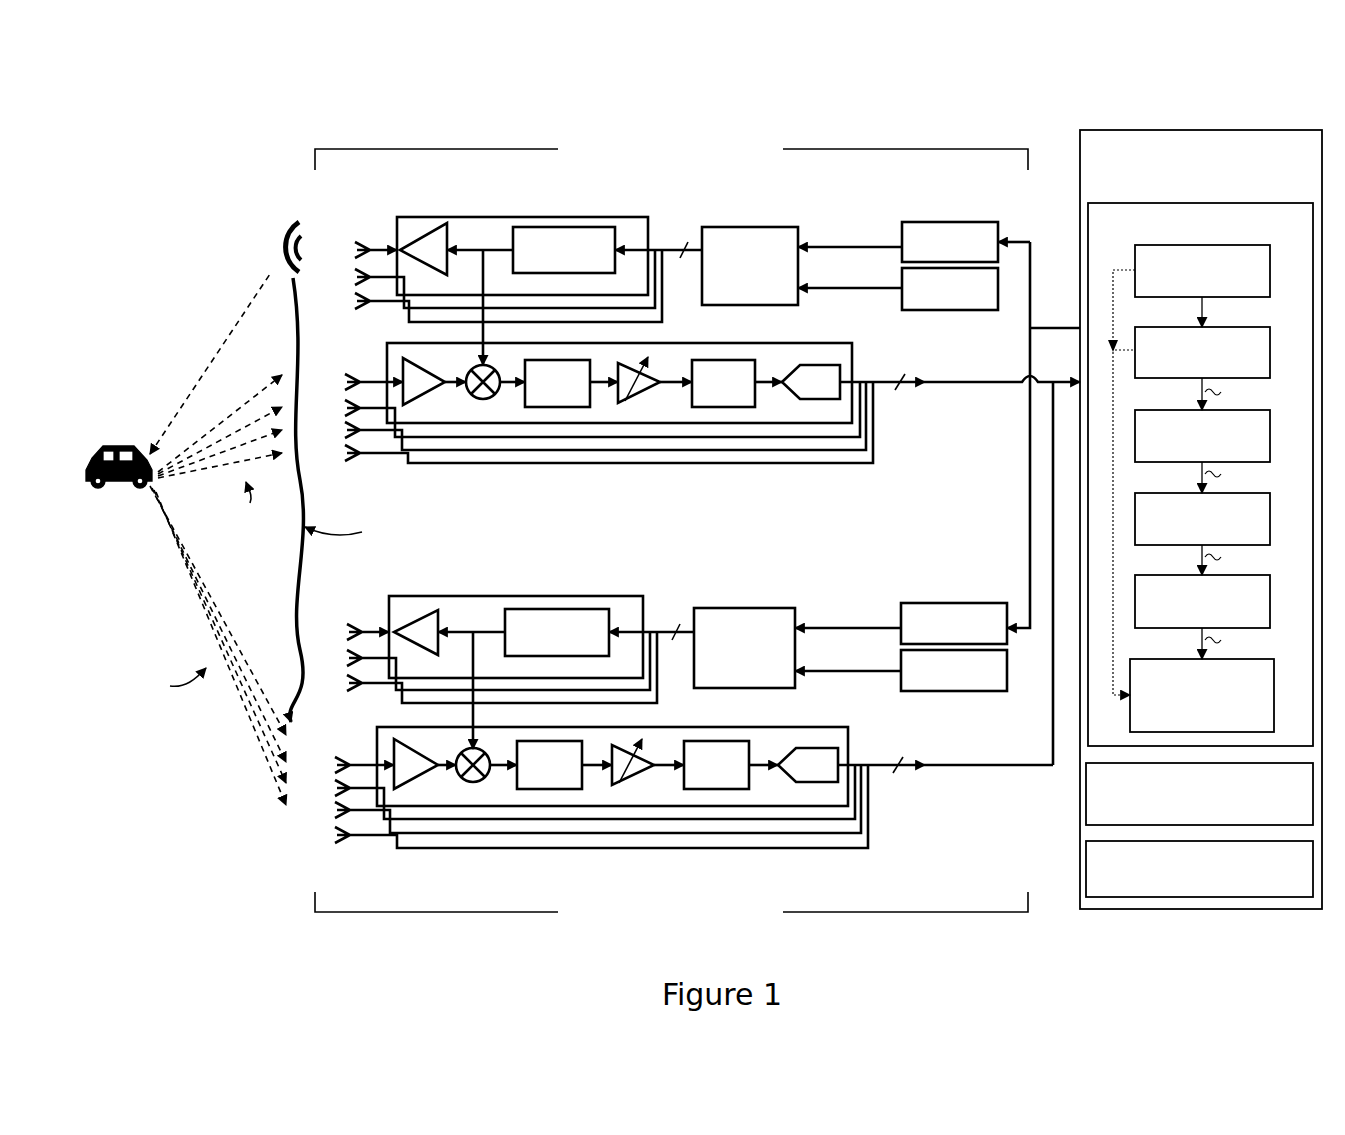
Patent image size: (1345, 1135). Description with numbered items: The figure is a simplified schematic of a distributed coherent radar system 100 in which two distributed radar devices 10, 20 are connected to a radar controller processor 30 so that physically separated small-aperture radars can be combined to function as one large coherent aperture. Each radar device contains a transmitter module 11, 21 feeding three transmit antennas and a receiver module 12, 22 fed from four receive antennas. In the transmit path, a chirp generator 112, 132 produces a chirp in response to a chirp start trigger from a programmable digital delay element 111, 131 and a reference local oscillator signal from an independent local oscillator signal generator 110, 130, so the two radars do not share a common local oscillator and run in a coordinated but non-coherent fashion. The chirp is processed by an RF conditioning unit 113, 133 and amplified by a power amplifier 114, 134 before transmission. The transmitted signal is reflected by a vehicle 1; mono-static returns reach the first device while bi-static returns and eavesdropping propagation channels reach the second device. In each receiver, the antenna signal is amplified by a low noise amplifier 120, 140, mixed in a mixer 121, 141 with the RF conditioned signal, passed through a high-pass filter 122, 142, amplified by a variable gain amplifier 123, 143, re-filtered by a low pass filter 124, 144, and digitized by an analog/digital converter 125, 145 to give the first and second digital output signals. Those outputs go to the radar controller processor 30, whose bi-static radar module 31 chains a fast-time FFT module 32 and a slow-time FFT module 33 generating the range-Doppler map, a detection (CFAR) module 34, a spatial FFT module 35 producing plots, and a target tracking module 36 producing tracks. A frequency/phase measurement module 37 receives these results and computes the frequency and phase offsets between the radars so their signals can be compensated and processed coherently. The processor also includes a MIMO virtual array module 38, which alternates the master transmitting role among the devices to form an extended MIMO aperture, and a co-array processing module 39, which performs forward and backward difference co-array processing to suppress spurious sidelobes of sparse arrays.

The distributed coherent radar system 100 is at (166, 114).
The vehicle 1 is at (114, 486).
The distributed radar device 10 is at (692, 454).
The distributed radar device 20 is at (674, 742).
The transmitter module 11 is at (528, 256).
The receiver module 12 is at (609, 390).
The transmitter module 21 is at (520, 636).
The receiver module 22 is at (601, 775).
The local oscillator signal generator 110 is at (902, 309).
The programmable digital delay element 111 is at (955, 222).
The chirp generator 112 is at (755, 227).
The RF conditioning unit 113 is at (564, 259).
The power amplifier 114 is at (437, 257).
The low noise amplifier 120 is at (434, 389).
The mixer 121 is at (497, 393).
The high-pass filter 122 is at (561, 390).
The variable gain amplifier 123 is at (639, 389).
The low pass filter 124 is at (729, 390).
The analog/digital converter 125 is at (811, 393).
The local oscillator signal generator 130 is at (901, 691).
The programmable digital delay element 131 is at (960, 603).
The chirp generator 132 is at (750, 608).
The RF conditioning unit 133 is at (557, 641).
The power amplifier 134 is at (430, 641).
The low noise amplifier 140 is at (425, 771).
The mixer 141 is at (487, 776).
The high-pass filter 142 is at (552, 772).
The variable gain amplifier 143 is at (633, 771).
The low pass filter 144 is at (721, 772).
The analog/digital converter 145 is at (808, 776).
The radar controller processor 30 is at (1201, 519).
The bi-static radar module 31 is at (1200, 474).
The fast-time FFT module 32 is at (1202, 271).
The slow-time FFT module 33 is at (1202, 352).
The detection (CFAR) module 34 is at (1202, 436).
The spatial FFT module 35 is at (1202, 519).
The target tracking module 36 is at (1202, 601).
The frequency/phase measurement module 37 is at (1202, 695).
The MIMO virtual array module 38 is at (1199, 794).
The co-array processing module 39 is at (1199, 869).